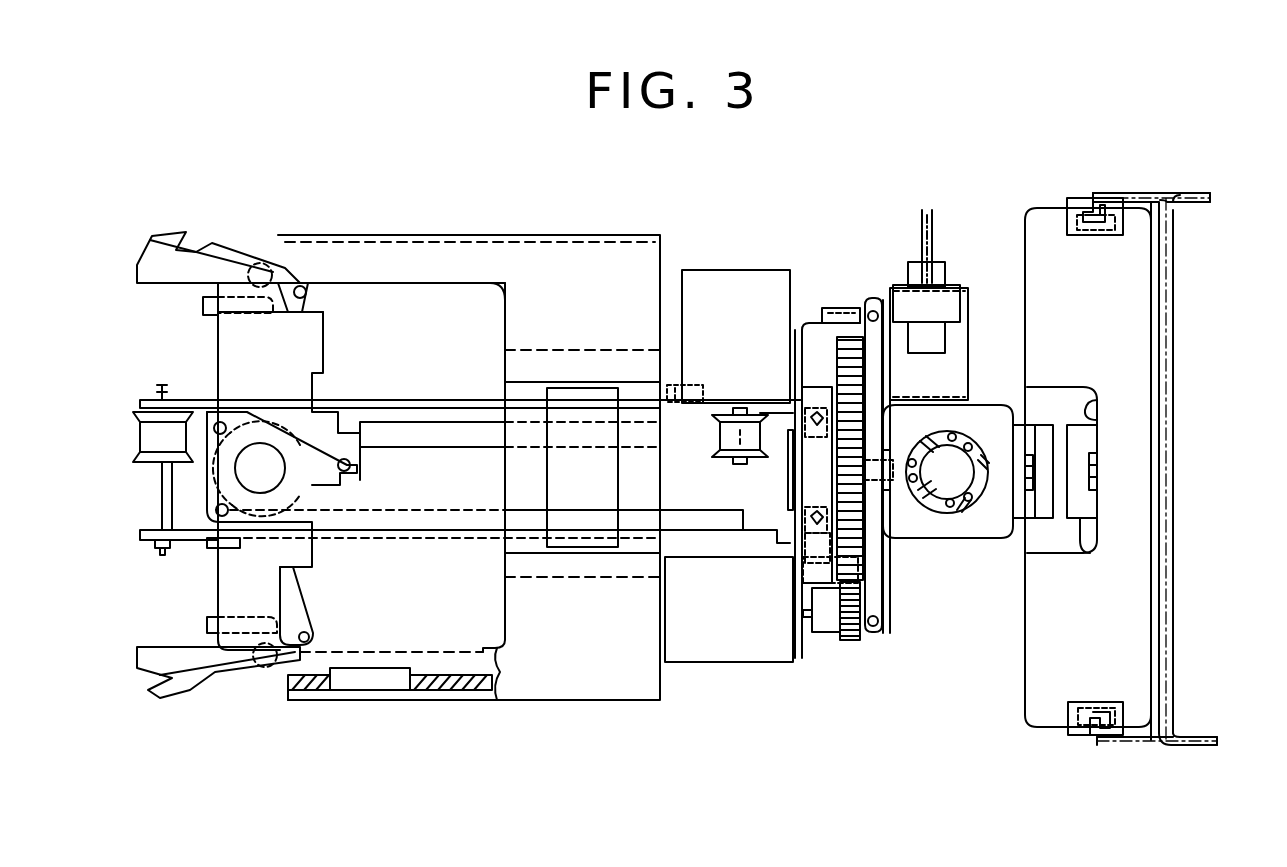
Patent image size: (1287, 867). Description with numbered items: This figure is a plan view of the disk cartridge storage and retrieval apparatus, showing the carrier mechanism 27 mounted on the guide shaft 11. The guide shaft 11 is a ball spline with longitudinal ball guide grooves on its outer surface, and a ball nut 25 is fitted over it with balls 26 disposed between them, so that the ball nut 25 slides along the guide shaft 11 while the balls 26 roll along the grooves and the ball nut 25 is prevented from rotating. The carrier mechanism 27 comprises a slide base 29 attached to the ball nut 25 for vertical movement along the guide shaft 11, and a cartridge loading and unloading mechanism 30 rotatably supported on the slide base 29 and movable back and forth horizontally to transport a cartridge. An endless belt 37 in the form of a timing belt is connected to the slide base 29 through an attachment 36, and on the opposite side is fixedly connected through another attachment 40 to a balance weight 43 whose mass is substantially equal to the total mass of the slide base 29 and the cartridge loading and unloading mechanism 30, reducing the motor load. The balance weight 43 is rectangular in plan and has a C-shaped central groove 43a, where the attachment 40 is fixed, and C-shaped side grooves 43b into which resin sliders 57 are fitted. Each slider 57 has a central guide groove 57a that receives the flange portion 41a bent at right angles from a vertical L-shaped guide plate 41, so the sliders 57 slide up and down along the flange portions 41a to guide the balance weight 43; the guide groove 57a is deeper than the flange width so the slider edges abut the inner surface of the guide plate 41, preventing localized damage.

The guide shaft 11 is at (942, 480).
The ball nut 25 is at (927, 510).
The balls 26 is at (965, 438).
The carrier mechanism 27 is at (793, 222).
The slide base 29 is at (957, 503).
The cartridge loading and unloading mechanism 30 is at (511, 235).
The attachment 36 is at (1043, 420).
The endless belt 37 is at (1030, 470).
The attachment 40 is at (1088, 550).
The guide plate 41 is at (1187, 190).
The flange portion 41a is at (1125, 203).
The balance weight 43 is at (1152, 490).
The central groove 43a is at (1090, 412).
The side groove 43b is at (1118, 237).
The slider 57 is at (1102, 208).
The guide groove 57a is at (1085, 215).